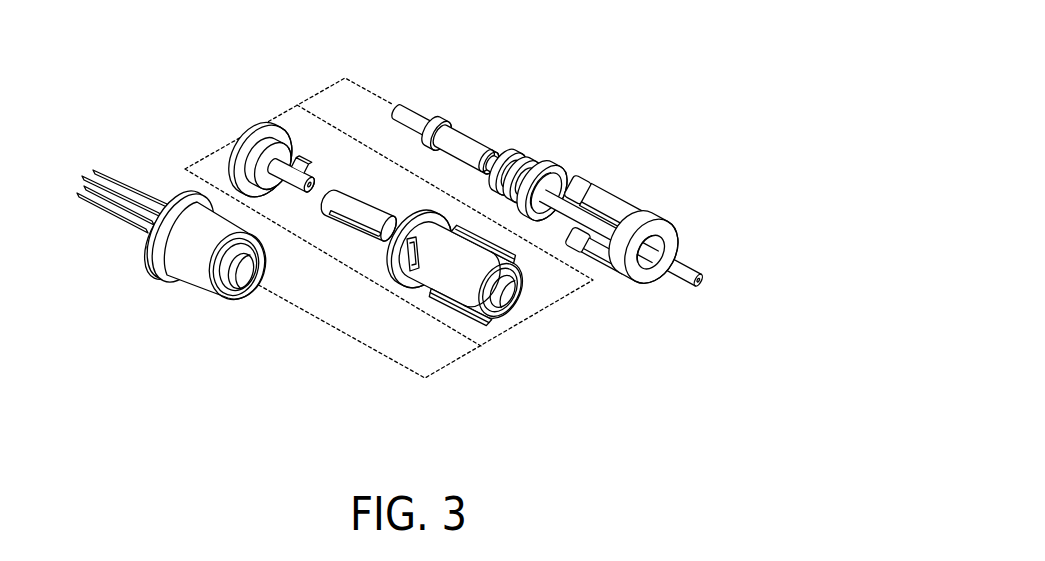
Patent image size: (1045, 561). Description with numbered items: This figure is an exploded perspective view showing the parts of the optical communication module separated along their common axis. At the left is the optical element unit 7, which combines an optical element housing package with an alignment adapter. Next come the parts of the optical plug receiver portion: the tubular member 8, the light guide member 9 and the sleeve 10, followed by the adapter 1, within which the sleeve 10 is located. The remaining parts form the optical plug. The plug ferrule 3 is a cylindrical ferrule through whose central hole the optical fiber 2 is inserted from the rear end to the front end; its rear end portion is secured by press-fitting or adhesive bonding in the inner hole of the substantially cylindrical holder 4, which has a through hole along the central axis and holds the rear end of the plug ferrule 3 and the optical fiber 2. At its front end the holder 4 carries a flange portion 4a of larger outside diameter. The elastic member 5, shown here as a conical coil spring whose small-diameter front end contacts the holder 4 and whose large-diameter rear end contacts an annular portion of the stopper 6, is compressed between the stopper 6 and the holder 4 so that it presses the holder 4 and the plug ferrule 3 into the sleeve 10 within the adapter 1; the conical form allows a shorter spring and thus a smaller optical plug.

The adapter 1 is at (479, 326).
The optical fiber 2 is at (665, 264).
The plug ferrule 3 is at (415, 118).
The holder 4 is at (470, 143).
The flange portion 4a is at (438, 118).
The elastic member 5 is at (528, 160).
The stopper 6 is at (622, 208).
The optical element unit 7 is at (197, 285).
The tubular member 8 is at (247, 148).
The light guide member 9 is at (295, 176).
The sleeve 10 is at (355, 207).